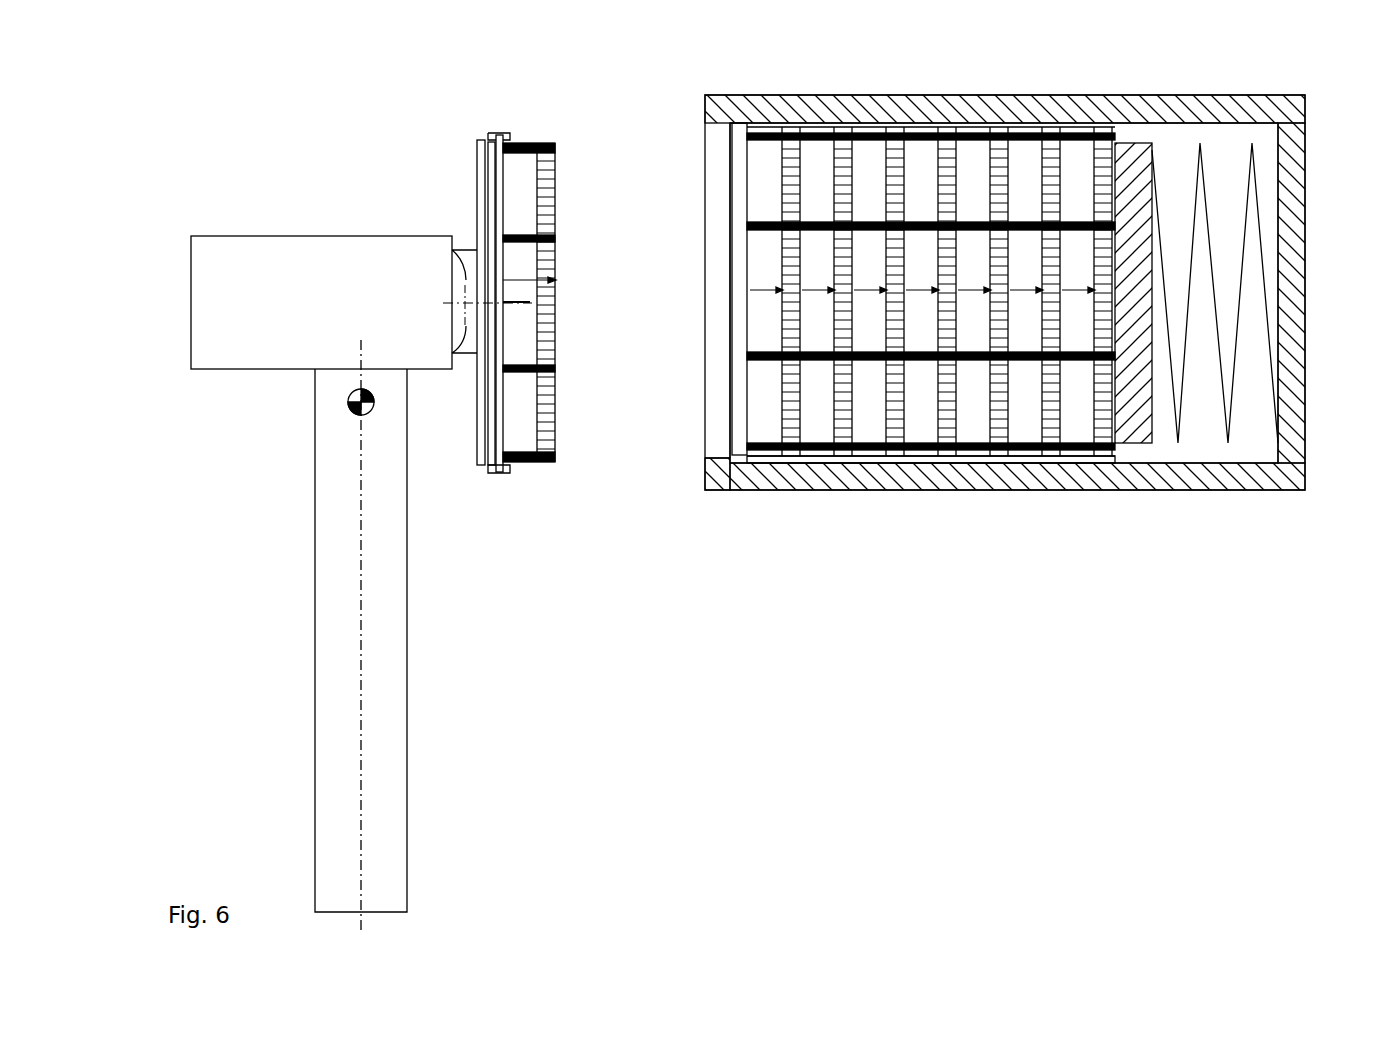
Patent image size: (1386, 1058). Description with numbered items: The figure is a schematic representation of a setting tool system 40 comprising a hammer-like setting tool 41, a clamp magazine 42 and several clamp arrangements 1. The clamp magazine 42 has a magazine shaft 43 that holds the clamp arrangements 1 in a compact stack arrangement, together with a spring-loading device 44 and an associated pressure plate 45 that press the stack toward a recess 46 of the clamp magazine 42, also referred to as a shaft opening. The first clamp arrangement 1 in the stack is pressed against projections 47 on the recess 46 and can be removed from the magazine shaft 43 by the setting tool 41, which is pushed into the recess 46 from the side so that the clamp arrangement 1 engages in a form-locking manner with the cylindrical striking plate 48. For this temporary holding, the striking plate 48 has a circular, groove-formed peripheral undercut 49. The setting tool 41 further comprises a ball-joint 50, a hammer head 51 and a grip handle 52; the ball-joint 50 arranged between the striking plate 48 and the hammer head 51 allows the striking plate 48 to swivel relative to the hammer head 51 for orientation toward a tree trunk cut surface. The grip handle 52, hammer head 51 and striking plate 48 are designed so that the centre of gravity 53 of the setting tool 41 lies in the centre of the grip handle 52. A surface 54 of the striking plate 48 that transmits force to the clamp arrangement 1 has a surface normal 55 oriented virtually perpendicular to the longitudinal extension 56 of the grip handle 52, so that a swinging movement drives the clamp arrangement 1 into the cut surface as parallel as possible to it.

The clamp arrangement 1 is at (875, 165).
The setting tool system 40 is at (165, 166).
The setting tool 41 is at (256, 544).
The clamp magazine 42 is at (1154, 515).
The magazine shaft 43 is at (826, 452).
The spring-loading device 44 is at (1232, 403).
The pressure plate 45 is at (1145, 435).
The recess 46 is at (717, 425).
The projections 47 is at (712, 120).
The striking plate 48 is at (482, 170).
The peripheral undercut 49 is at (493, 400).
The ball-joint 50 is at (458, 265).
The hammer head 51 is at (300, 248).
The grip handle 52 is at (328, 485).
The centre of gravity 53 is at (348, 403).
The surface 54 is at (508, 195).
The surface normal 55 is at (520, 280).
The longitudinal extension 56 is at (358, 733).